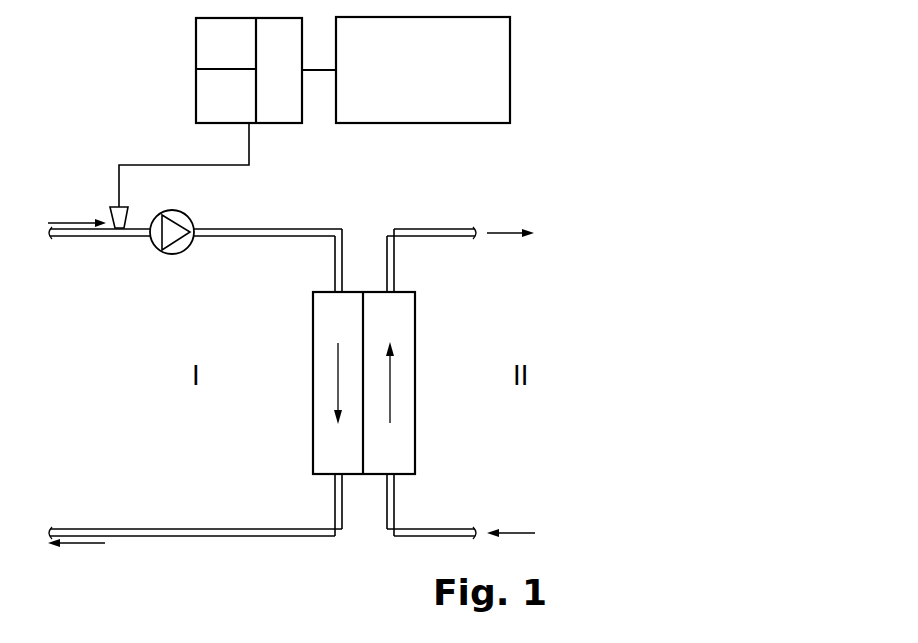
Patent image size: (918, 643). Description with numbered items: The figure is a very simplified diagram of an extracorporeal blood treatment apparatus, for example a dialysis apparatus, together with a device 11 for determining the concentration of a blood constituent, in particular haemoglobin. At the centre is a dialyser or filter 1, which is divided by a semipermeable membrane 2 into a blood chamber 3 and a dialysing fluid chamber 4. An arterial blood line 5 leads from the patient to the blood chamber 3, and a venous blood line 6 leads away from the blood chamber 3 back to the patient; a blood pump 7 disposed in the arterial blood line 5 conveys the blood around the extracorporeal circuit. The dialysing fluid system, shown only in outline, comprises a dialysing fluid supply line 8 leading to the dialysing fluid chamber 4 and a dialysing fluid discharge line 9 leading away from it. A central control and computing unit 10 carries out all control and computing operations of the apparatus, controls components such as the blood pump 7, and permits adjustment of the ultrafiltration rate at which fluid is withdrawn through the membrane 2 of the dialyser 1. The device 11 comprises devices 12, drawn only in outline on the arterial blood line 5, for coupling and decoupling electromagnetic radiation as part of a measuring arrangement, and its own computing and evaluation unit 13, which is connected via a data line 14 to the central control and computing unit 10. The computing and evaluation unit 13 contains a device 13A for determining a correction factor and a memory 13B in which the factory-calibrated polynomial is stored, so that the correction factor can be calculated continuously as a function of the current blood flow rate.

The dialyser 1 is at (420, 348).
The semipermeable membrane 2 is at (365, 328).
The blood chamber 3 is at (314, 376).
The dialysing fluid chamber 4 is at (415, 376).
The arterial blood line 5 is at (62, 240).
The venous blood line 6 is at (65, 528).
The blood pump 7 is at (157, 248).
The dialysing fluid supply line 8 is at (441, 527).
The dialysing fluid discharge line 9 is at (423, 228).
The central control and computing unit 10 is at (510, 88).
The device for determining the concentration of a blood constituent 11 is at (193, 60).
The devices for coupling and decoupling electromagnetic radiation 12 is at (104, 208).
The computing and evaluation unit 13 is at (197, 108).
The device for determining a correction factor 13A is at (246, 57).
The memory 13B is at (246, 114).
The data line 14 is at (323, 70).